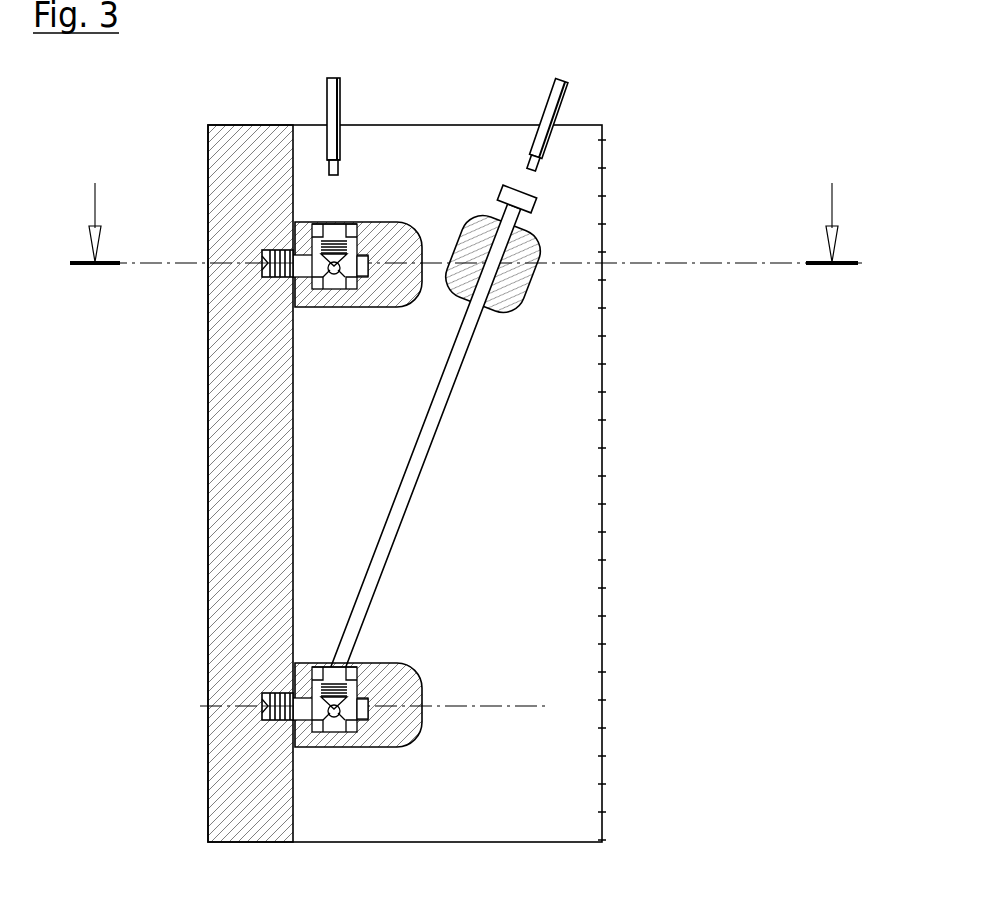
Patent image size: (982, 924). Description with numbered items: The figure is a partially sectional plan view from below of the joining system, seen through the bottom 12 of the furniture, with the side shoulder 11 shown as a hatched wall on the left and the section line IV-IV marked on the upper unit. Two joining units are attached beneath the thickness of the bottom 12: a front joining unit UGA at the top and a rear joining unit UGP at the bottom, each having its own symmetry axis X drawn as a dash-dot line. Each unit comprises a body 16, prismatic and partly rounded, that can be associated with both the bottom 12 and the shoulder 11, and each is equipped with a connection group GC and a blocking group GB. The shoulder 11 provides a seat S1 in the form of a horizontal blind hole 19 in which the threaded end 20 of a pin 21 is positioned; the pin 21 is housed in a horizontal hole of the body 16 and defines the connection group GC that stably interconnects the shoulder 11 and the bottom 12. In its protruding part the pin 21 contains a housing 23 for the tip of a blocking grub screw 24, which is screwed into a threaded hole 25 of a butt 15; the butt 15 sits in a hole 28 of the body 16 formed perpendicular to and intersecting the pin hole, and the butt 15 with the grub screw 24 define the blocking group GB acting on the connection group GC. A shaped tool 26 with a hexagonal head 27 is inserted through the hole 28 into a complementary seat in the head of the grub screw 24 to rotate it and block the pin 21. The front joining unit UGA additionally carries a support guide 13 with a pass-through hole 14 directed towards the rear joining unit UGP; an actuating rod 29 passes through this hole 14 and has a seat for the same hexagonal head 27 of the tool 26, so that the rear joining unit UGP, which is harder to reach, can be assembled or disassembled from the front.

The side shoulder 11 is at (217, 560).
The bottom 12 is at (582, 776).
The support guide 13 is at (536, 277).
The pass-through hole 14 is at (510, 254).
The butt 15 is at (313, 226).
The body 16 is at (424, 298).
The horizontal blind hole 19 is at (262, 263).
The threaded end 20 is at (265, 277).
The pin 21 is at (303, 273).
The housing 23 is at (328, 280).
The blocking grub screw 24 is at (332, 228).
The threaded hole 25 is at (364, 700).
The shaped tool 26 is at (335, 110).
The hexagonal head 27 is at (343, 185).
The hole 28 is at (343, 206).
The actuating rod 29 is at (437, 415).
The connection group GC is at (274, 237).
The seat S1 is at (255, 247).
The blocking group GB is at (343, 218).
The front joining unit UGA is at (441, 211).
The rear joining unit UGP is at (445, 724).
The symmetry axis X is at (735, 263).
The section line IV- IV is at (464, 223).